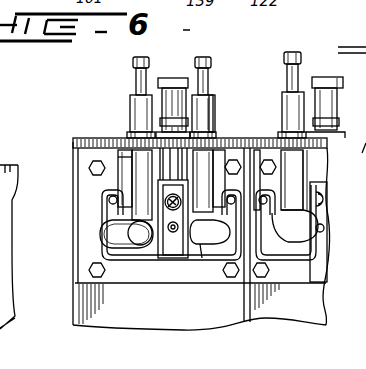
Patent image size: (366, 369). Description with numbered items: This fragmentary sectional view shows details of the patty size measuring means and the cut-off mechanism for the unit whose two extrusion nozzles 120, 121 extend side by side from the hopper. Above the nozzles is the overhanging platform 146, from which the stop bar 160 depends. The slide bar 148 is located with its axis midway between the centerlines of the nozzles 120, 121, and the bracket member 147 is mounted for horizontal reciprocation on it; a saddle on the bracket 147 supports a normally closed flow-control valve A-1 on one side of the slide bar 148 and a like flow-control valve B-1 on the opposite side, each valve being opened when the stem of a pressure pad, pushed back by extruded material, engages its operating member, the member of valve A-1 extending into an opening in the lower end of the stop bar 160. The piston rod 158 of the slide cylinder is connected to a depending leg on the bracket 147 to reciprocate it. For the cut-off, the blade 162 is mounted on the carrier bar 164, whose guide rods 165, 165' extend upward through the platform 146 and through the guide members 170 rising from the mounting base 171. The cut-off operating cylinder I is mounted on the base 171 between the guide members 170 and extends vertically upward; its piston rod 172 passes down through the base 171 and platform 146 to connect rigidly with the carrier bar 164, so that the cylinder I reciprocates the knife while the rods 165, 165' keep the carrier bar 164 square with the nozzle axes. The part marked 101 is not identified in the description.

The mounting frame 101 is at (148, 316).
The extrusion nozzle 120 is at (142, 234).
The extrusion nozzle 121 is at (206, 238).
The overhanging platform 146 is at (240, 125).
The bracket member 147 is at (128, 222).
The slide bar 148 is at (165, 201).
The piston rod 158 is at (184, 252).
The stop bar 160 is at (140, 172).
The cut-off blade 162 is at (120, 158).
The carrier bar 164 is at (120, 165).
The guide bar 165 is at (118, 76).
The guide bar 165' is at (225, 76).
The guide member 170 is at (138, 110).
The mounting base 171 is at (132, 112).
The piston rod 172 is at (200, 104).
The cut-off means operating cylinder I is at (172, 73).
The flow-control valve A-1 is at (145, 235).
The flow-control valve B-1 is at (216, 235).